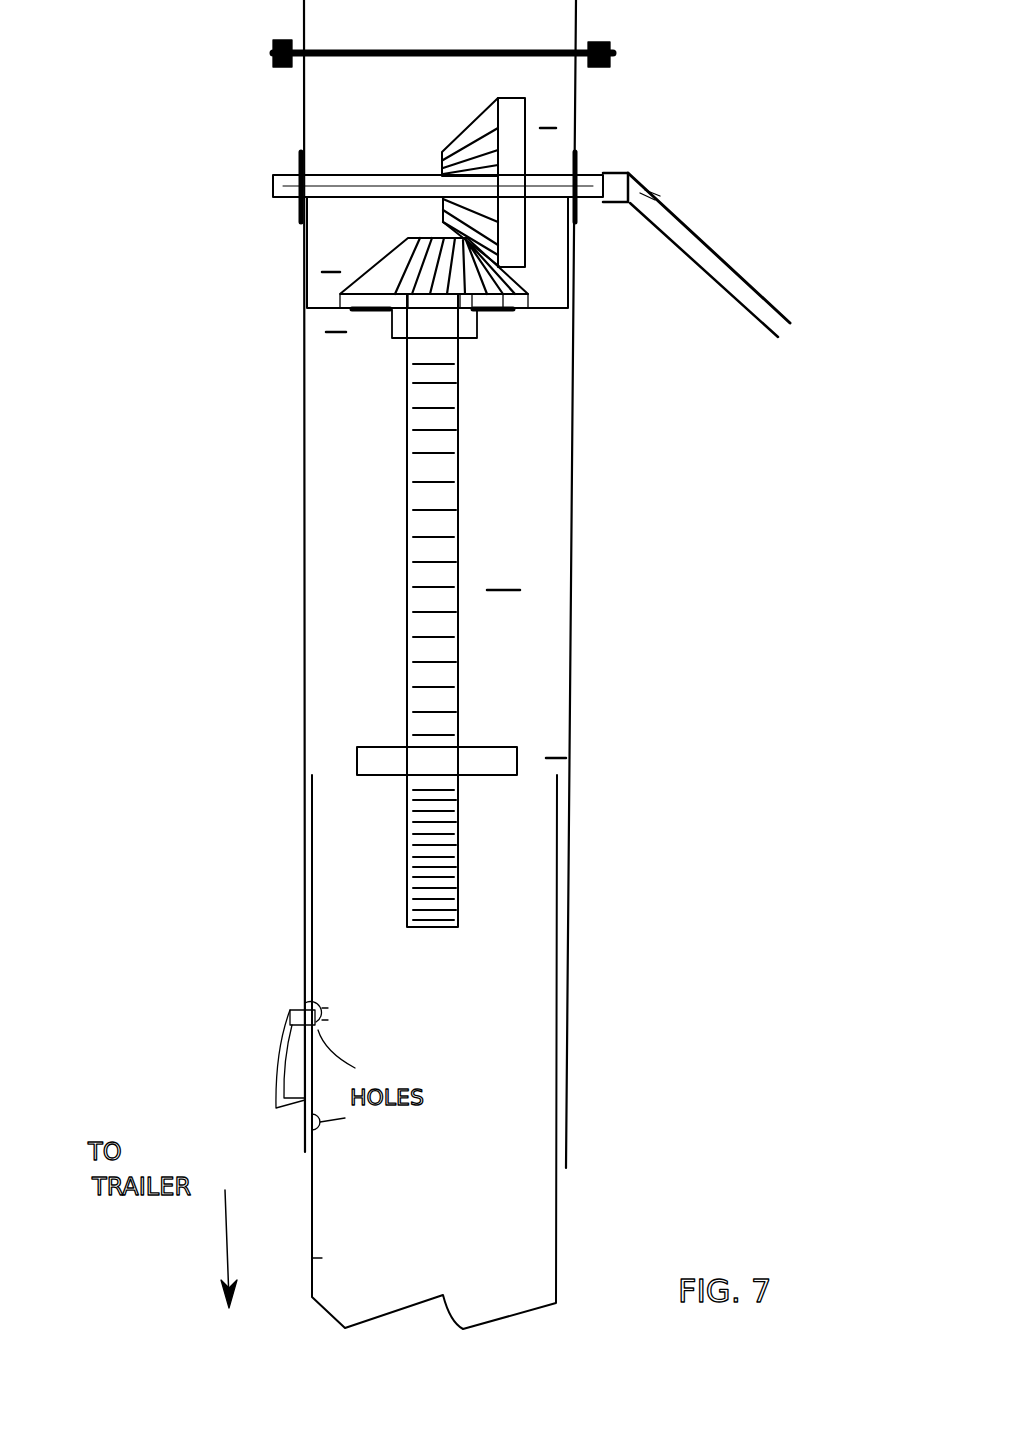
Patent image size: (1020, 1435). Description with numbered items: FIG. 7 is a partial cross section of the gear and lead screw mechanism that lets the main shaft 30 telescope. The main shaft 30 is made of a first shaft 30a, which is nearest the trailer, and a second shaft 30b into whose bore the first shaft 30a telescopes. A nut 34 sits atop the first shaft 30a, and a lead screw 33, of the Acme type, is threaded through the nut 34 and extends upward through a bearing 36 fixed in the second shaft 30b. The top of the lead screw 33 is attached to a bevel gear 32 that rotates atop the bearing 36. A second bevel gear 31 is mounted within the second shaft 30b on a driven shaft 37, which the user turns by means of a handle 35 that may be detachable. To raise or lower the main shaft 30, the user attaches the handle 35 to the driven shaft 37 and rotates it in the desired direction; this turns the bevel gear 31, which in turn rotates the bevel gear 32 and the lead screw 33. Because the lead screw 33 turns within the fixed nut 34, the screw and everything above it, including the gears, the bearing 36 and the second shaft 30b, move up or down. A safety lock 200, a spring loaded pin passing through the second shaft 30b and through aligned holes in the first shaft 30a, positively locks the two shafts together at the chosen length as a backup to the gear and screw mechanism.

The main shaft 30 is at (603, 988).
The first shaft 30a is at (567, 1090).
The second shaft 30b is at (567, 903).
The second bevel gear 31 is at (515, 240).
The bevel gear 32 is at (502, 290).
The lead screw 33 is at (448, 493).
The nut 34 is at (508, 753).
The handle 35 is at (707, 253).
The bearing 36 is at (400, 330).
The driven shaft 37 is at (355, 185).
The safety lock 200 is at (282, 1028).